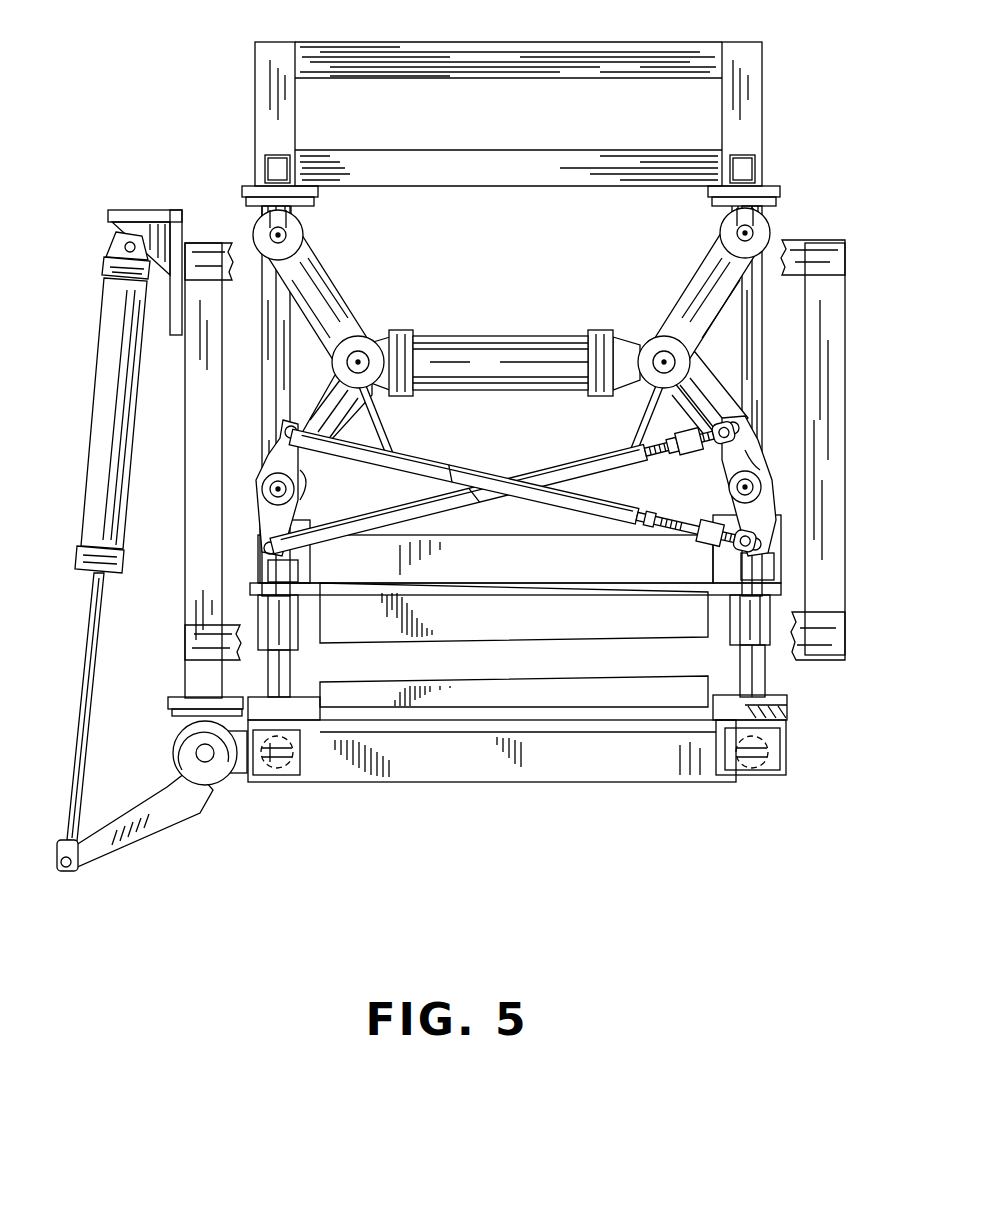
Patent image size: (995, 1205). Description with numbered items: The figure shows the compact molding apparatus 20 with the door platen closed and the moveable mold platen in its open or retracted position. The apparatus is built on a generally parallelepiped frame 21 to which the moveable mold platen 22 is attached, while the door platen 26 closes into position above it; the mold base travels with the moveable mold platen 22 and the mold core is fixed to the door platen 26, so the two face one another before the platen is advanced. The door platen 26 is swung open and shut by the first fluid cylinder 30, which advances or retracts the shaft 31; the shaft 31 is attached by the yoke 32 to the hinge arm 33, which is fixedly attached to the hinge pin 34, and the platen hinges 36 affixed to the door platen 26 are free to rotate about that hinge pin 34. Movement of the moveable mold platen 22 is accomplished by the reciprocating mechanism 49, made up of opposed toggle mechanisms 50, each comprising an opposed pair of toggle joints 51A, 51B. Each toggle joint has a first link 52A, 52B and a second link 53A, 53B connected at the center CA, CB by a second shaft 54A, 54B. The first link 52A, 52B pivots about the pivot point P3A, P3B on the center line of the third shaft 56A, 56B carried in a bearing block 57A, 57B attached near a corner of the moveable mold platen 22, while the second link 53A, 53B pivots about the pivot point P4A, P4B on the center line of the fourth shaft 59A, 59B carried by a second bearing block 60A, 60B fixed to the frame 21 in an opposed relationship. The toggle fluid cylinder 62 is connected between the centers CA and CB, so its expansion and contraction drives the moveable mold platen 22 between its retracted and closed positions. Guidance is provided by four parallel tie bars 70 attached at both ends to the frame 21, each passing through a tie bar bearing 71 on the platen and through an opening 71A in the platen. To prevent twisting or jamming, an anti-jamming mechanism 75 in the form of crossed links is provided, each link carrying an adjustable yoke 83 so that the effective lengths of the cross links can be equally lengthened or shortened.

The molding apparatus 20 is at (151, 77).
The frame 21 is at (828, 667).
The moveable mold platen 22 is at (500, 566).
The door platen 26 is at (548, 790).
The first fluid cylinder 30 is at (105, 386).
The shaft 31 is at (95, 682).
The yoke 32 is at (77, 867).
The hinge arm 33 is at (140, 828).
The hinge pin 34 is at (205, 782).
The platen hinges 36 is at (232, 764).
The reciprocating mechanism 49 is at (498, 283).
The toggle mechanism 50 is at (483, 407).
The toggle joint 51A is at (342, 262).
The toggle joint 51B is at (658, 262).
The first link 52A is at (355, 436).
The first link 52B is at (673, 396).
The second link 53A is at (335, 296).
The second link 53B is at (693, 290).
The second shaft 54A is at (376, 388).
The second shaft 54B is at (668, 352).
The third shaft 56A is at (742, 505).
The third shaft 56B is at (285, 508).
The bearing block 57A is at (310, 525).
The bearing block 57B is at (662, 536).
The fourth shaft 59A is at (312, 233).
The fourth shaft 59B is at (768, 226).
The second bearing block 60A is at (302, 214).
The second bearing block 60B is at (718, 212).
The toggle fluid cylinder 62 is at (496, 375).
The tie bar 70 is at (275, 330).
The tie bar bearing 71 is at (298, 615).
The opening 71A is at (712, 582).
The anti-jamming mechanism 75 is at (536, 456).
The adjustable yoke 83 is at (704, 418).
The pivot point P3A is at (270, 489).
The pivot point P3B is at (738, 487).
The pivot point P4A is at (266, 230).
The pivot point P4B is at (760, 230).
The center CA is at (359, 360).
The center CB is at (664, 360).